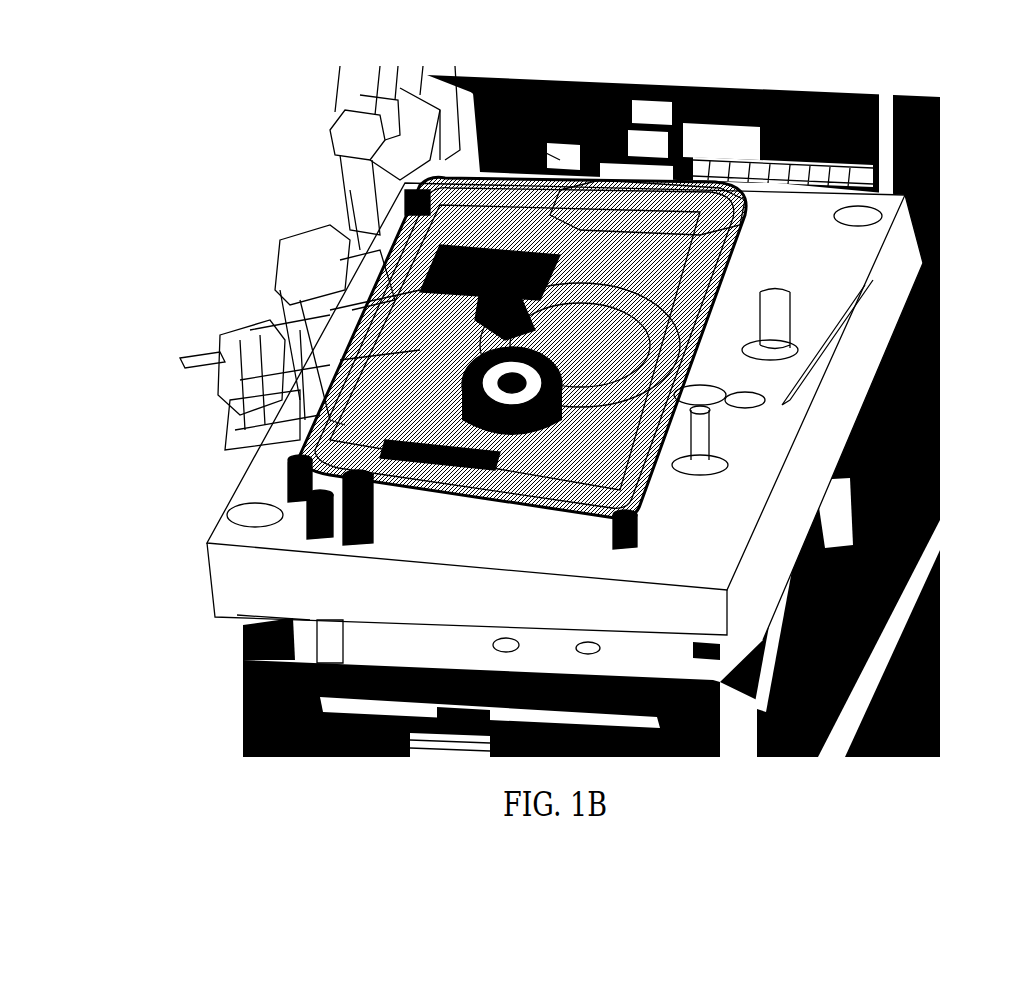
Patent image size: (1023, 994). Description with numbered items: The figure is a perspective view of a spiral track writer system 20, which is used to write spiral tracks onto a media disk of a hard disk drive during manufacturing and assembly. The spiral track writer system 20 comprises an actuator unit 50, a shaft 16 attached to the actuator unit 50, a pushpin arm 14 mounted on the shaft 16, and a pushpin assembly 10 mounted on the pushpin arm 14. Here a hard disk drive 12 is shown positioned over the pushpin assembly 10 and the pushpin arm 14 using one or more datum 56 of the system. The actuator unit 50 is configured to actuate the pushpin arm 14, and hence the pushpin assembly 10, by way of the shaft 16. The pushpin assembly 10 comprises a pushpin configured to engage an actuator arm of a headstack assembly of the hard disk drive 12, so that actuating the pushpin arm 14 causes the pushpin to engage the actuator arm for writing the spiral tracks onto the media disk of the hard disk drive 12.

The spiral track writer system 20 is at (545, 391).
The pushpin assembly 10 is at (503, 323).
The hard disk drive 12 is at (713, 188).
The pushpin arm 14 is at (627, 353).
The shaft 16 is at (603, 413).
The actuator unit 50 is at (803, 228).
The datum 56 is at (417, 205).